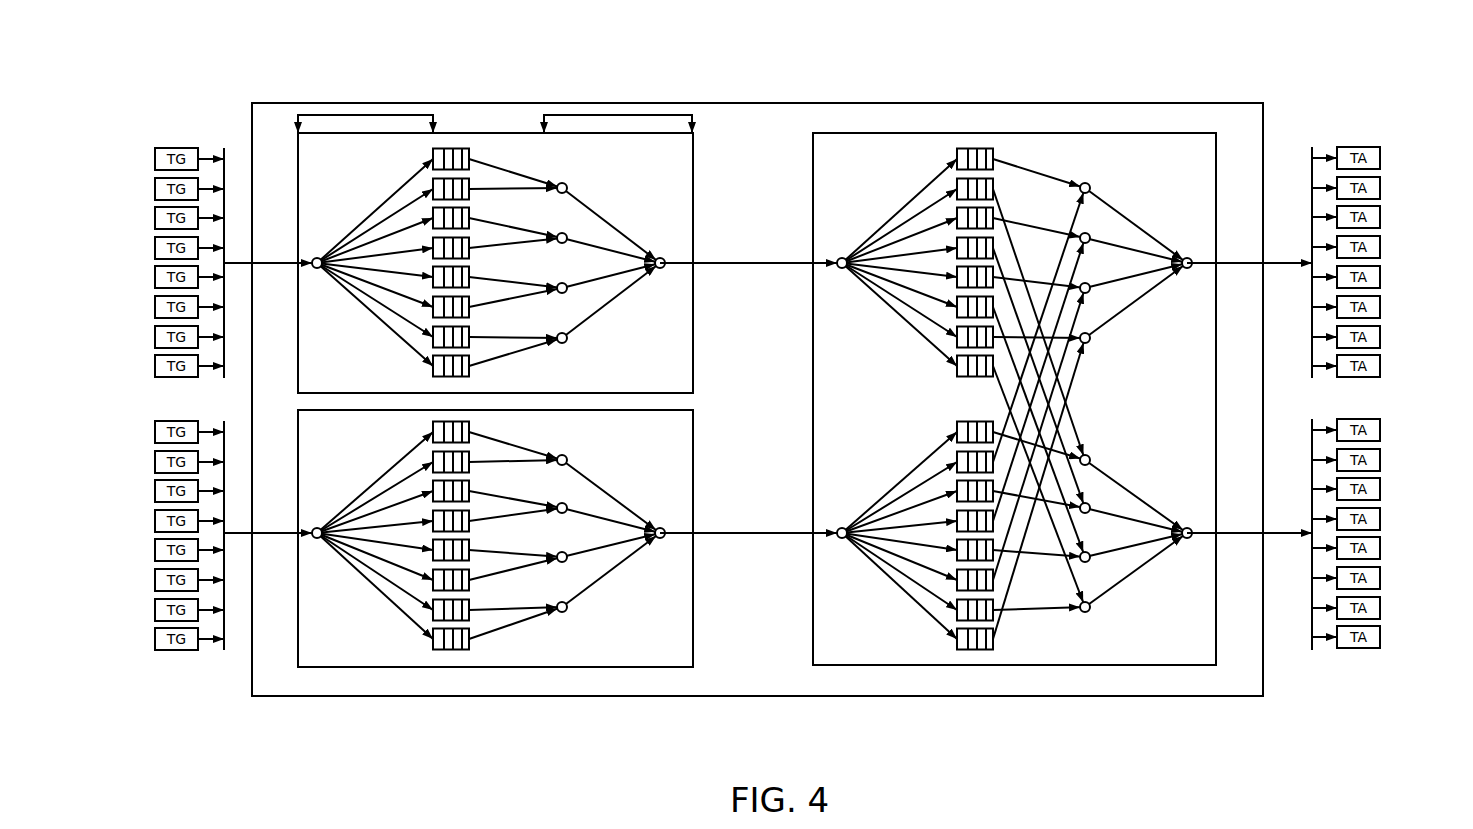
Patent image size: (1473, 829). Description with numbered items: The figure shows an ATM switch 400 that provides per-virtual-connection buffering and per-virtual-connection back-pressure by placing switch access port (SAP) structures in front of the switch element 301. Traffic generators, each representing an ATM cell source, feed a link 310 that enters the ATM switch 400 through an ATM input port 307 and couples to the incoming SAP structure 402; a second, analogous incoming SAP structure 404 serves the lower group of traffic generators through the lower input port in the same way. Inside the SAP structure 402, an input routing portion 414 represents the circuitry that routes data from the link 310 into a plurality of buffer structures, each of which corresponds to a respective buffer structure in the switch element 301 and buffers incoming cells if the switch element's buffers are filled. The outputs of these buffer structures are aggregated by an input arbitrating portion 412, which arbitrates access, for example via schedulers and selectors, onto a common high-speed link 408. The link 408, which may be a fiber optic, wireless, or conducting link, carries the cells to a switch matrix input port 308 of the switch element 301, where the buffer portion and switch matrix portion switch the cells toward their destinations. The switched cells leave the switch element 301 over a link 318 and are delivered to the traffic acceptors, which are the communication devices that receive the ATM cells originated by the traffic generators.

The ATM switch 400 is at (1060, 697).
The link 310 is at (236, 262).
The ATM input port 307 is at (258, 266).
The incoming SAP structure 402 is at (600, 393).
The incoming SAP structure 404 is at (600, 667).
The input routing portion 414 is at (325, 115).
The input arbitrating portion 412 is at (617, 115).
The link 408 is at (707, 264).
The switch matrix input port 308 is at (812, 265).
The switch element 301 is at (1218, 645).
The link 318 is at (1270, 263).